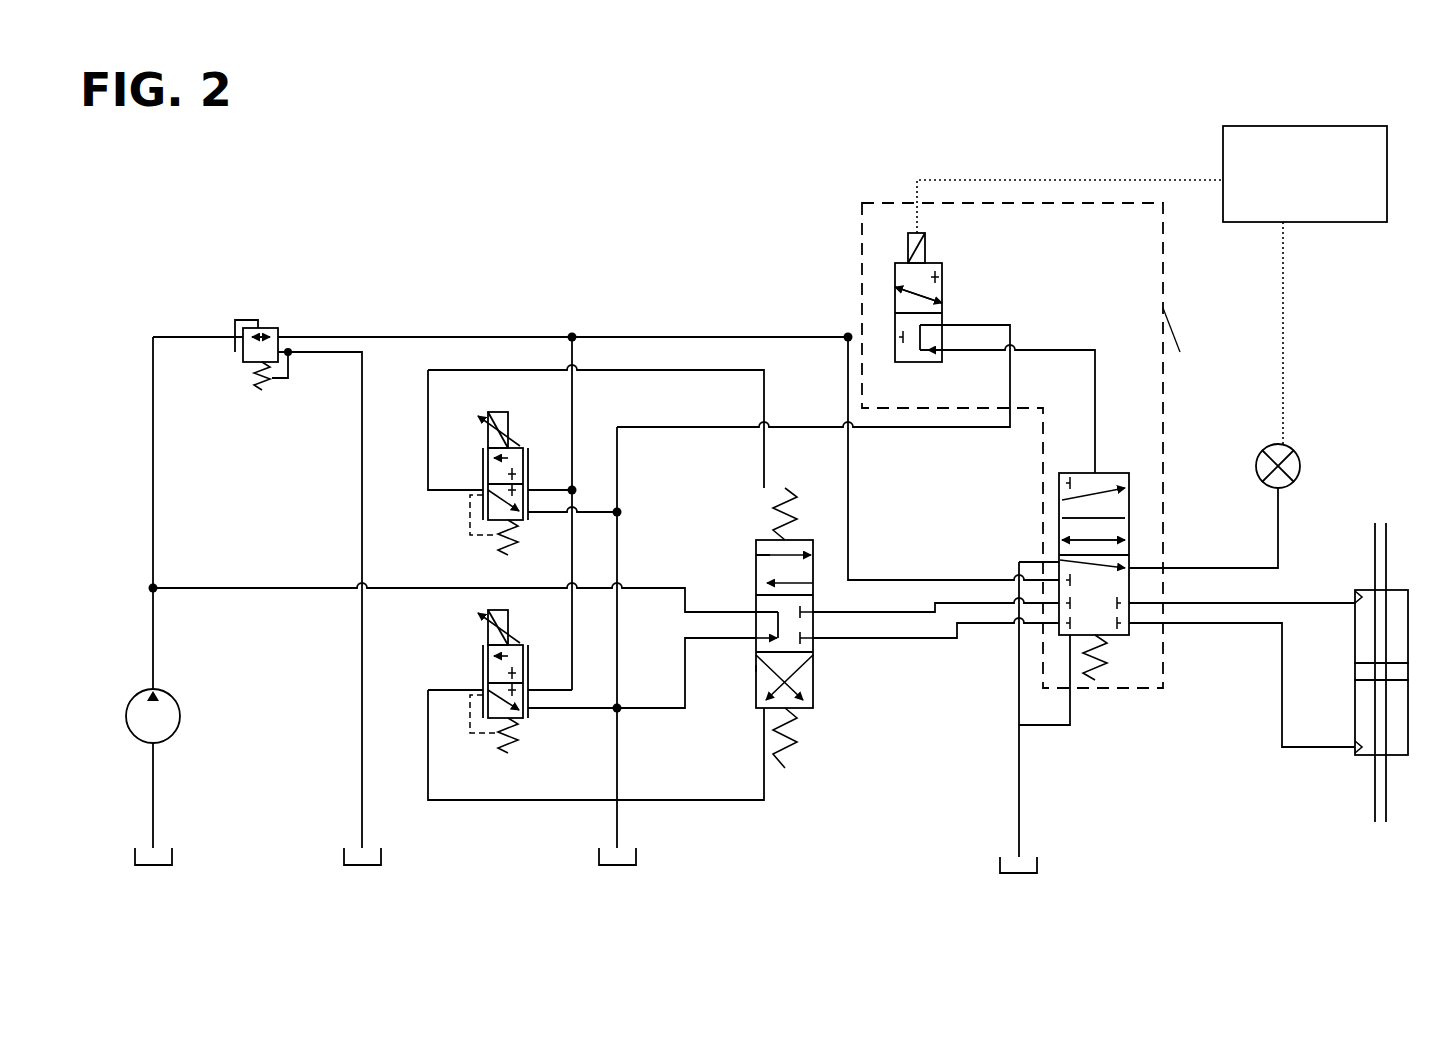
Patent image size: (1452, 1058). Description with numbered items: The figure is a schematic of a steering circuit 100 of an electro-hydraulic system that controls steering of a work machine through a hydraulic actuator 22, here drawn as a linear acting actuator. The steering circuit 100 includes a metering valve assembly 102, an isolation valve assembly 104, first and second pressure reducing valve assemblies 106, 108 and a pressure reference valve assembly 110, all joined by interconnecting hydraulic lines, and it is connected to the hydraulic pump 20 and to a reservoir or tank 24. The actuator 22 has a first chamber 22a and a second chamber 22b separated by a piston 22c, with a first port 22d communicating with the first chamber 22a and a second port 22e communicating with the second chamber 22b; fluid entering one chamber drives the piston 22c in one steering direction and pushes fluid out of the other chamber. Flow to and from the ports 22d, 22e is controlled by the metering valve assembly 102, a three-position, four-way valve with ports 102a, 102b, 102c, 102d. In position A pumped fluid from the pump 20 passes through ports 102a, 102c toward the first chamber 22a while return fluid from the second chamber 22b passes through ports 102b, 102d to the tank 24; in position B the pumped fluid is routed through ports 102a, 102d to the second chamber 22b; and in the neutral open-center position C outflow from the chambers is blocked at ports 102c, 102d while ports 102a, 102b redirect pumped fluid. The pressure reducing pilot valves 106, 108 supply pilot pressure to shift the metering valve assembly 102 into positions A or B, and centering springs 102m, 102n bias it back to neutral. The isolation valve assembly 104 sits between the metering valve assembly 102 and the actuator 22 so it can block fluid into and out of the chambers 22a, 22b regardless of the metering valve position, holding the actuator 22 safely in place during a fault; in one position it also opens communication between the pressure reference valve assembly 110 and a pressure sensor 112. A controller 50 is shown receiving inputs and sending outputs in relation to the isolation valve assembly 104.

The steering circuit 100 is at (290, 226).
The pressure reference valve assembly 110 is at (252, 362).
The hydraulic pump 20 is at (172, 738).
The reservoir or tank 24 is at (163, 865).
The first pressure reducing valve assembly 106 is at (483, 492).
The second pressure reducing valve assembly 108 is at (523, 705).
The controller 50 is at (1305, 174).
The pressure sensor 112 is at (1285, 442).
The isolation valve assembly 104 is at (1110, 683).
The metering valve assembly 102 is at (813, 708).
The port of the metering valve assembly 102a is at (756, 552).
The port of the metering valve assembly 102b is at (756, 583).
The port of the metering valve assembly 102c is at (813, 555).
The port of the metering valve assembly 102d is at (813, 583).
The centering spring 102m is at (792, 490).
The centering spring 102n is at (787, 768).
The hydraulic actuator 22 is at (1365, 757).
The first chamber 22a is at (1403, 597).
The second chamber 22b is at (1395, 737).
The piston 22c is at (1368, 672).
The first port 22d is at (1352, 597).
The second port 22e is at (1350, 752).